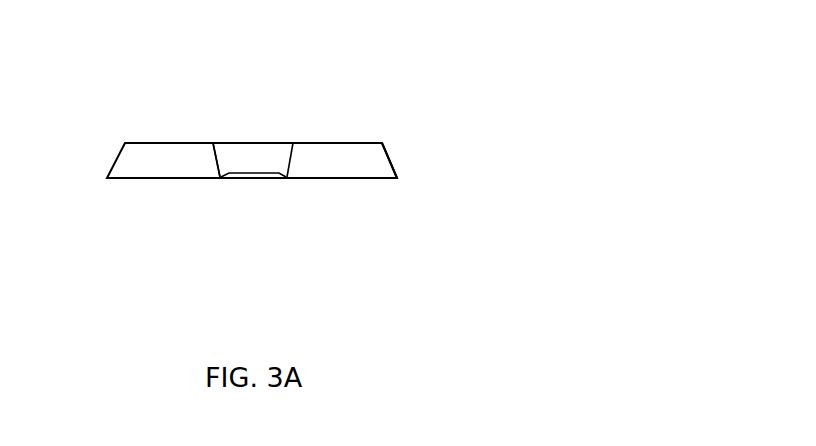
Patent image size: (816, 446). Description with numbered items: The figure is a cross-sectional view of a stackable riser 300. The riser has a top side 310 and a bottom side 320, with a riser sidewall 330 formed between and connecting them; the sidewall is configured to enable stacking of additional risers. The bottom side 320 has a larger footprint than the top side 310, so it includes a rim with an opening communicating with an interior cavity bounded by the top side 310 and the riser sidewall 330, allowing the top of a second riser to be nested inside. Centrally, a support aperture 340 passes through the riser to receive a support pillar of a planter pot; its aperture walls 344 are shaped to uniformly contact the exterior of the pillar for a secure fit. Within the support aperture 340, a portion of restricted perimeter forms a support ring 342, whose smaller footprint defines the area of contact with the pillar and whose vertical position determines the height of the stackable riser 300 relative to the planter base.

The stackable riser 300 is at (423, 49).
The top side 310 is at (168, 143).
The bottom side 320 is at (176, 178).
The riser sidewall 330 is at (387, 153).
The support aperture 340 is at (255, 130).
The support ring 342 is at (228, 178).
The aperture walls 344 is at (214, 130).